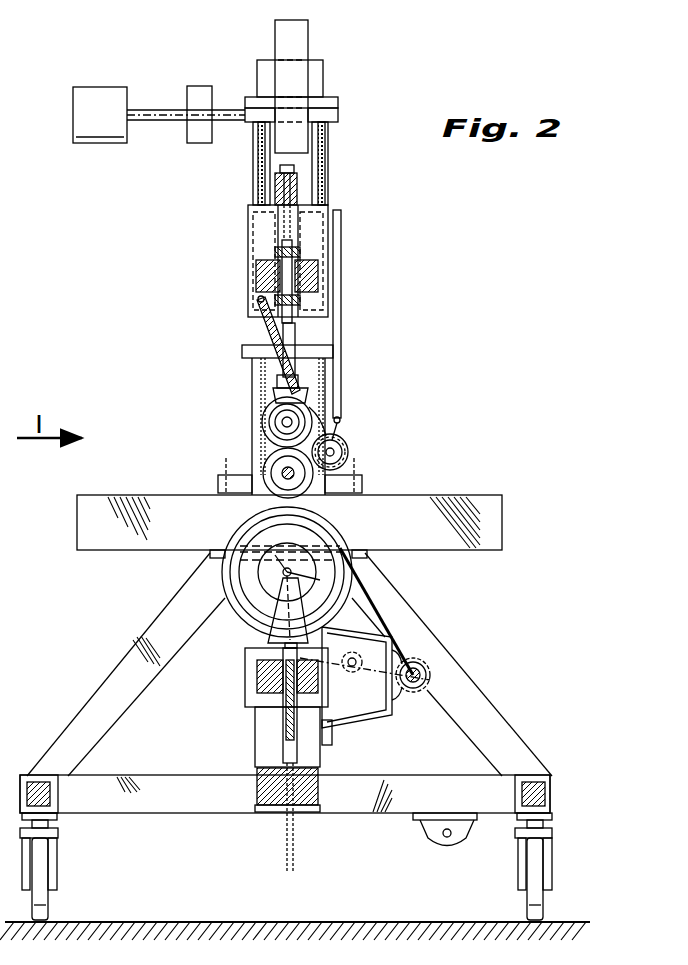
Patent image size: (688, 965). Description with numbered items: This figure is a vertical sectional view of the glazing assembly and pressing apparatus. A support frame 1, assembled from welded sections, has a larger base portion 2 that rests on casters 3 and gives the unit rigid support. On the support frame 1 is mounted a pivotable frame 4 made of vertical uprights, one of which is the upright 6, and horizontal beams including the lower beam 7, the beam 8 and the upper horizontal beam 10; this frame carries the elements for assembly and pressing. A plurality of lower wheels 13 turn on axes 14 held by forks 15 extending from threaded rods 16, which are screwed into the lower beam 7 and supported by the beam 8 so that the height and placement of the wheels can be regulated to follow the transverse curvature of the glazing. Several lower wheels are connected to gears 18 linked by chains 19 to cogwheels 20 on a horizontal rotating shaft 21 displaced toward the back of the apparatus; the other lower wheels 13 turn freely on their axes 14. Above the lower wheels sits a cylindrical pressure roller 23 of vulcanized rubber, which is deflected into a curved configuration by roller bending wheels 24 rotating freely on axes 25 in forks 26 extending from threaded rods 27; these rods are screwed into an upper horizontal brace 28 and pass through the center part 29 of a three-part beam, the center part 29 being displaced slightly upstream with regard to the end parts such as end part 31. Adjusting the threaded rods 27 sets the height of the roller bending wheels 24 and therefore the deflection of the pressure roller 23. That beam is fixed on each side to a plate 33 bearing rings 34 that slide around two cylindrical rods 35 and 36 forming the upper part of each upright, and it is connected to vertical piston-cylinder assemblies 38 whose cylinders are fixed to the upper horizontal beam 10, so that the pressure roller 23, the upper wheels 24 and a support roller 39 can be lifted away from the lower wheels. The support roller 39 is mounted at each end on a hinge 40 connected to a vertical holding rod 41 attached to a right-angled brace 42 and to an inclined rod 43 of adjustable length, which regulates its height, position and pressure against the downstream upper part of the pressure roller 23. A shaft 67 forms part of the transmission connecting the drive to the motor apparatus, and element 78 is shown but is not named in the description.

The support frame 1 is at (502, 518).
The base portion 2 is at (473, 721).
The casters 3 is at (42, 867).
The pivotable frame 4 is at (250, 760).
The vertical upright 6 is at (252, 375).
The lower beam 7 is at (257, 792).
The horizontal beam 8 is at (257, 687).
The upper horizontal beam 10 is at (323, 78).
The lower wheels 13 is at (353, 583).
The axes 14 is at (242, 540).
The forks 15 is at (260, 630).
The threaded rods 16 is at (290, 730).
The gears 18 is at (327, 542).
The chains 19 is at (363, 675).
The cogwheels 20 is at (418, 689).
The horizontal rotating shaft 21 is at (425, 671).
The pressure roller 23 is at (268, 457).
The roller bending wheels 24 is at (267, 413).
The axes 25 is at (280, 427).
The forks 26 is at (280, 395).
The threaded rods 27 is at (282, 278).
The upper horizontal brace 28 is at (300, 185).
The center part 29 is at (318, 287).
The end part 31 is at (323, 278).
The plate 33 is at (262, 223).
The rings 34 is at (250, 238).
The cylindrical rod 35 is at (257, 163).
The cylindrical rod 36 is at (327, 162).
The piston-cylinder assemblies 38 is at (302, 138).
The support roller 39 is at (345, 450).
The hinge 40 is at (340, 421).
The vertical holding rod 41 is at (337, 358).
The right-angled brace 42 is at (347, 252).
The inclined rod 43 is at (303, 367).
The shaft 67 is at (447, 843).
The motor 78 is at (100, 133).